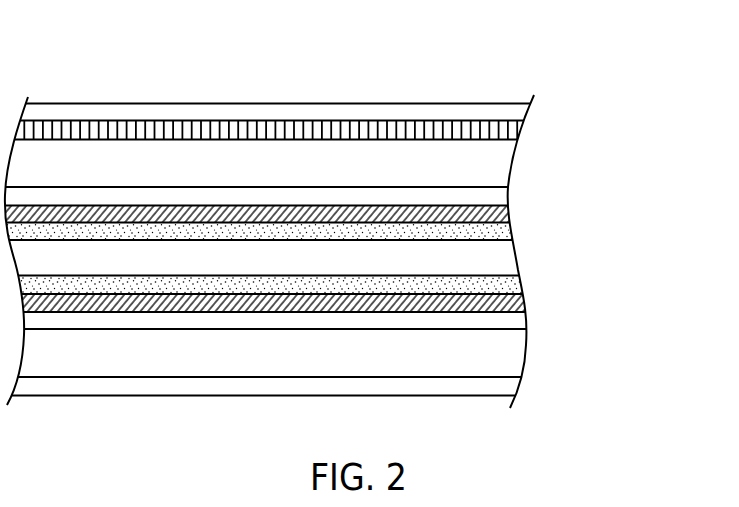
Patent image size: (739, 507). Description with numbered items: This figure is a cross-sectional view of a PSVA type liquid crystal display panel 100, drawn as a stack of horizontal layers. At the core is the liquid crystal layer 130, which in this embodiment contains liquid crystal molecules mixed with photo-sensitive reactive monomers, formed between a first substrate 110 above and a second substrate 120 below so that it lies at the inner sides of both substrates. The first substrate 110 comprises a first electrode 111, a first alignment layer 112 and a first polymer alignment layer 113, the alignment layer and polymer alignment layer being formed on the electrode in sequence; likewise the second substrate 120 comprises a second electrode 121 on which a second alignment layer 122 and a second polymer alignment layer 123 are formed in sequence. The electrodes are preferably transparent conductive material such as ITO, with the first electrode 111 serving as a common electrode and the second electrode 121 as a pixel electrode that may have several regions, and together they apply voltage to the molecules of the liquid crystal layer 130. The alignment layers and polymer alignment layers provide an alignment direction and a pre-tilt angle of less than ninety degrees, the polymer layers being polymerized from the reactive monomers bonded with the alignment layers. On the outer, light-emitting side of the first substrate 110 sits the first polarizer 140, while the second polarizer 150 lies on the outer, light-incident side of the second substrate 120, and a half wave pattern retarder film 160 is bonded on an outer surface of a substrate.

The liquid crystal display panel 100 is at (638, 117).
The first substrate 110 is at (500, 157).
The first electrode 111 is at (493, 193).
The first alignment layer 112 is at (498, 212).
The first polymer alignment layer 113 is at (498, 236).
The second substrate 120 is at (520, 357).
The second electrode 121 is at (520, 322).
The second alignment layer 122 is at (522, 302).
The second polymer alignment layer 123 is at (520, 283).
The liquid crystal layer 130 is at (508, 256).
The first polarizer 140 is at (478, 112).
The second polarizer 150 is at (508, 388).
The half wave pattern retarder film 160 is at (513, 130).